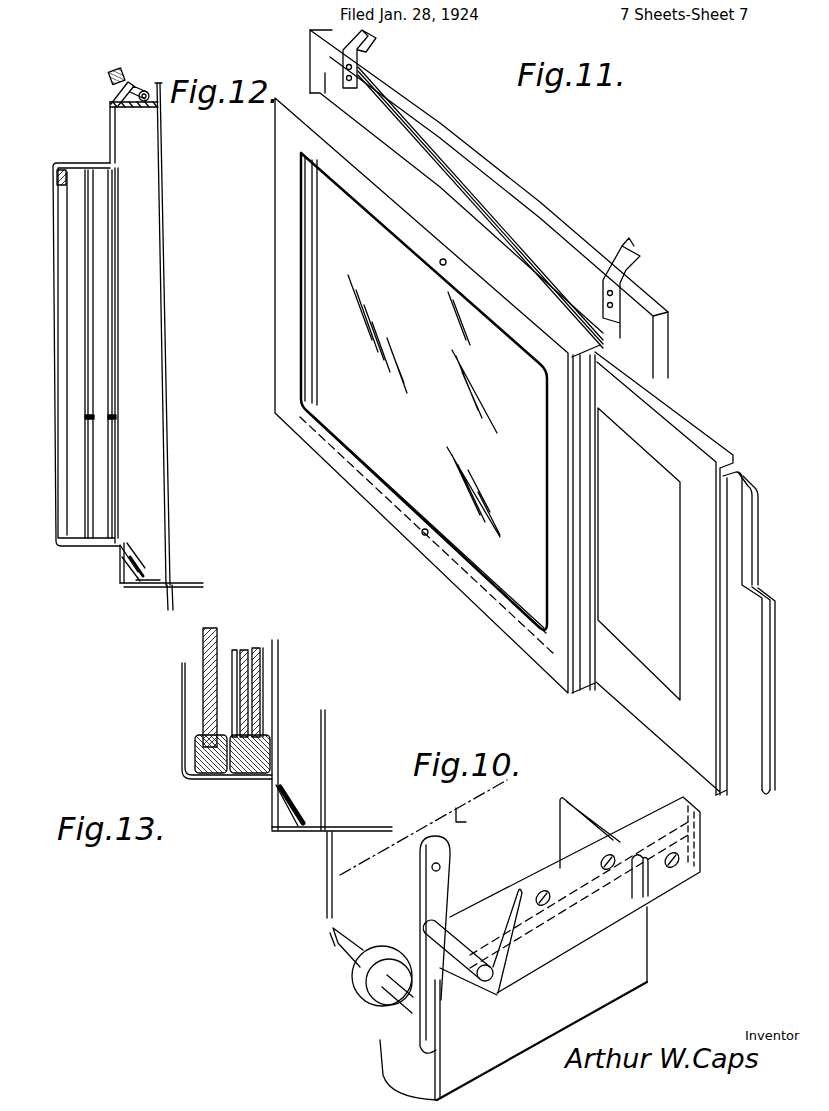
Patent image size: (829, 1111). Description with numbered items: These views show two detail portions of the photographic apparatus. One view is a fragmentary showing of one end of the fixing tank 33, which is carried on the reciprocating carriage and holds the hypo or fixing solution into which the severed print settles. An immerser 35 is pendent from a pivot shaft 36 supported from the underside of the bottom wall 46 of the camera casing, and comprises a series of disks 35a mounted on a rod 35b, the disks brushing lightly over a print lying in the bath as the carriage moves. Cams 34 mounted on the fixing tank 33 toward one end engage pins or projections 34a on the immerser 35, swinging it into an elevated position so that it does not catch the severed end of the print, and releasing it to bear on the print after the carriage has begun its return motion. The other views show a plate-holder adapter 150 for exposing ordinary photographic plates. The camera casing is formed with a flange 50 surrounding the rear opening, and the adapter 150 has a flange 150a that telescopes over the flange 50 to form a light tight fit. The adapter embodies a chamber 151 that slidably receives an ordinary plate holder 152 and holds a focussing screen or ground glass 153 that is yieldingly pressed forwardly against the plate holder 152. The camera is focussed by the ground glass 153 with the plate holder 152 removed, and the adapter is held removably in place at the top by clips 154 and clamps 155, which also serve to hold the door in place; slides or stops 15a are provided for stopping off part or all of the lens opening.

In FIG. 12, the slides or stops 15a is at (129, 90).
In FIG. 12, the clamps 155 is at (148, 95).
In FIG. 12, the clips 154 is at (112, 98).
In FIG. 11, the clips 154 is at (368, 48).
In FIG. 12, the plate-holder adapter 150 is at (112, 147).
In FIG. 11, the plate-holder adapter 150 is at (503, 200).
In FIG. 11, the flange 150a is at (676, 322).
In FIG. 12, the flange 50 is at (139, 110).
In FIG. 12, the focussing screen or ground glass 153 is at (77, 375).
In FIG. 13, the focussing screen or ground glass 153 is at (205, 667).
In FIG. 11, the focussing screen or ground glass 153 is at (343, 362).
In FIG. 12, the plate holder 152 is at (109, 497).
In FIG. 13, the plate holder 152 is at (270, 747).
In FIG. 11, the plate holder 152 is at (677, 420).
In FIG. 12, the chamber 151 is at (127, 500).
In FIG. 13, the chamber 151 is at (270, 670).
In FIG. 10, the bottom wall 46 is at (507, 793).
In FIG. 10, the pivot shaft 36 is at (444, 866).
In FIG. 10, the cams 34 is at (560, 868).
In FIG. 10, the pins or projections 34a is at (460, 943).
In FIG. 10, the immerser 35 is at (425, 903).
In FIG. 10, the disks 35a is at (358, 988).
In FIG. 10, the rod 35b is at (340, 947).
In FIG. 10, the fixing tank 33 is at (618, 993).